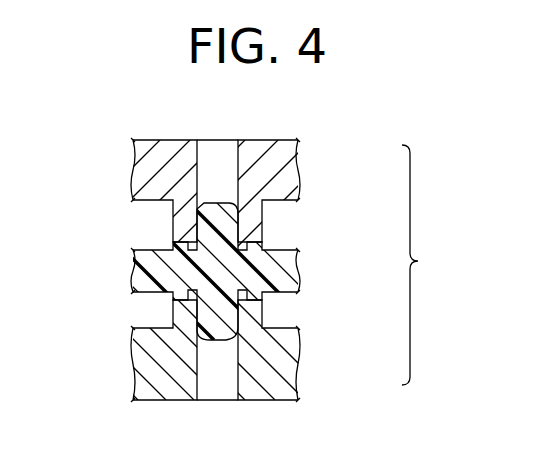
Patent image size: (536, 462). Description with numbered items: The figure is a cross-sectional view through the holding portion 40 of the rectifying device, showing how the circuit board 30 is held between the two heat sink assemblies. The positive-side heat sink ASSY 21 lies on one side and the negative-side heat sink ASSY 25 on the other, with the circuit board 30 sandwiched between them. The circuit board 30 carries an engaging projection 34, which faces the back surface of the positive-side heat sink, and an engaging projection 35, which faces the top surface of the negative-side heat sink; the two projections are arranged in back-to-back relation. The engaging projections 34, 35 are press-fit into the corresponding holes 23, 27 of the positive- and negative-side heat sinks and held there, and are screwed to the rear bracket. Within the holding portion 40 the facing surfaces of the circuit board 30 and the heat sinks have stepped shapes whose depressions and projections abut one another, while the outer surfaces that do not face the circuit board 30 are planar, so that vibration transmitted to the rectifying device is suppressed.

The positive-side heat sink ASSY 21 is at (135, 176).
The hole 23 is at (262, 157).
The negative-side heat sink ASSY 25 is at (135, 368).
The hole 27 is at (268, 360).
The circuit board 30 is at (207, 271).
The engaging projection 34 is at (240, 217).
The engaging projection 35 is at (223, 310).
The holding portion 40 is at (433, 265).